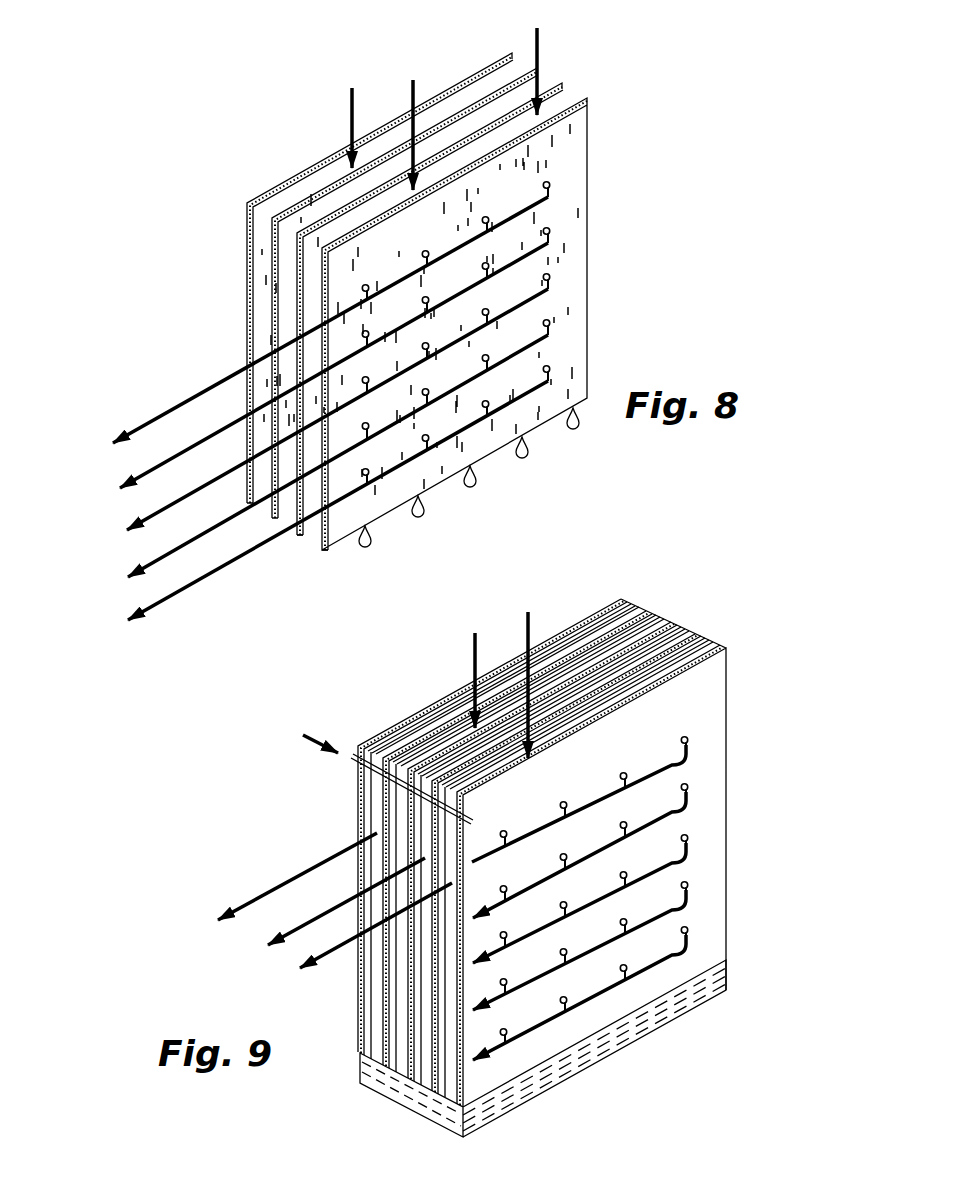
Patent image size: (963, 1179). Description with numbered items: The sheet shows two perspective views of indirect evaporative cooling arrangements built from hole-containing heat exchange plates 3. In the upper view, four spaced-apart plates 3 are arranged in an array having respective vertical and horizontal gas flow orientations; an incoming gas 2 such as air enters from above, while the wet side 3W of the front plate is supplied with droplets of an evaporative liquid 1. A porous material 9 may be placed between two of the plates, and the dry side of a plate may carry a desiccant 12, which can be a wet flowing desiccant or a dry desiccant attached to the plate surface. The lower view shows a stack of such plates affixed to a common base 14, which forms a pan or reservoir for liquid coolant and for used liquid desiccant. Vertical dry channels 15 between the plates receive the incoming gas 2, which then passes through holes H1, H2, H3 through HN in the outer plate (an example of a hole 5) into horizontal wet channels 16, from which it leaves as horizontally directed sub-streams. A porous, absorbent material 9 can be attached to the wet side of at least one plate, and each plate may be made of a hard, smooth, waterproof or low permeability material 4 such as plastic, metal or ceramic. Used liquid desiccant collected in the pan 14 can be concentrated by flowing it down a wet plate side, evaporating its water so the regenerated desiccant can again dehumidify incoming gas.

In FIG. 8, the evaporative liquid 1 is at (430, 500).
In FIG. 9, the evaporative liquid 1 is at (380, 765).
In FIG. 8, the incoming gas 2 is at (352, 92).
In FIG. 9, the incoming gas 2 is at (503, 675).
In FIG. 8, the heat exchange plate 3 is at (322, 553).
In FIG. 9, the heat exchange plate 3 is at (811, 513).
In FIG. 8, the wet side 3W is at (570, 318).
In FIG. 9, the low permeability material 4 is at (420, 968).
In FIG. 9, the hole 5 is at (700, 876).
In FIG. 8, the porous absorbent material 9 is at (562, 194).
In FIG. 9, the porous absorbent material 9 is at (372, 950).
In FIG. 8, the desiccant 12 is at (310, 543).
In FIG. 9, the desiccant 12 is at (618, 706).
In FIG. 9, the common base 14 is at (645, 1025).
In FIG. 8, the dry channel 15 is at (469, 152).
In FIG. 8, the wet channel 16 is at (324, 212).
In FIG. 9, the wet channel 16 is at (378, 795).
In FIG. 9, the hole H1 is at (503, 846).
In FIG. 9, the hole H2 is at (563, 817).
In FIG. 9, the hole H3 is at (623, 788).
In FIG. 9, the hole HN is at (690, 942).